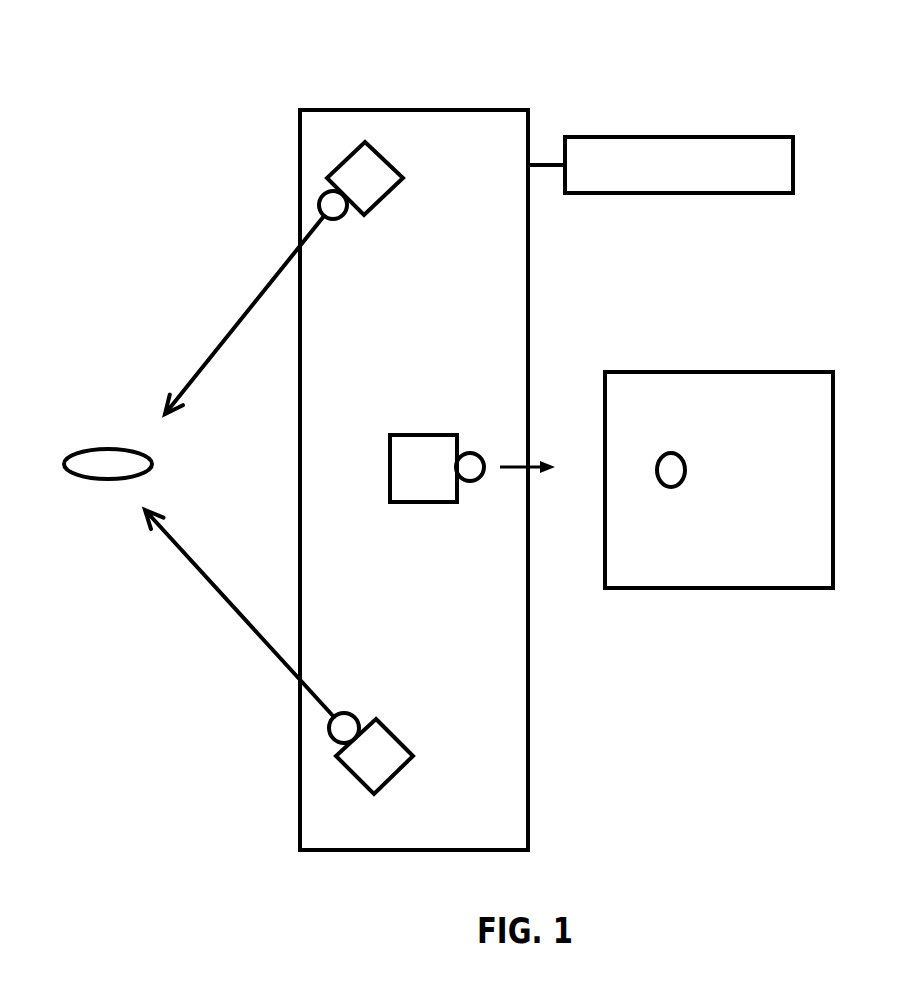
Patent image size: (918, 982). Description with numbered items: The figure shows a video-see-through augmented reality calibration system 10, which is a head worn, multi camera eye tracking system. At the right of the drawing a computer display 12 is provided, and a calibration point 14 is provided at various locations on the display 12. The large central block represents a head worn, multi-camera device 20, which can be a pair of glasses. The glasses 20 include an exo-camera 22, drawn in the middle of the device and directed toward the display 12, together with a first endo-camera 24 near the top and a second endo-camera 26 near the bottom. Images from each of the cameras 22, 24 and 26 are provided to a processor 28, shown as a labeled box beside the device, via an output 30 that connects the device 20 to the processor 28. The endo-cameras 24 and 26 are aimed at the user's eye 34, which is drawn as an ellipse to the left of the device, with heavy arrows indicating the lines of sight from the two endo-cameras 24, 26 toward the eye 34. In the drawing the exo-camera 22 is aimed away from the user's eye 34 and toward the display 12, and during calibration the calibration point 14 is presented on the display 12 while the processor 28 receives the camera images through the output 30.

The tracking system 10 is at (254, 193).
The computer display 12 is at (593, 368).
The calibration point 14 is at (667, 510).
The head worn, multi-camera device 20 is at (420, 102).
The exo-camera 22 is at (463, 520).
The first endo-camera 24 is at (335, 139).
The second endo-camera 26 is at (335, 785).
The processor 28 is at (695, 204).
The output 30 is at (543, 178).
The user's eye 34 is at (98, 430).